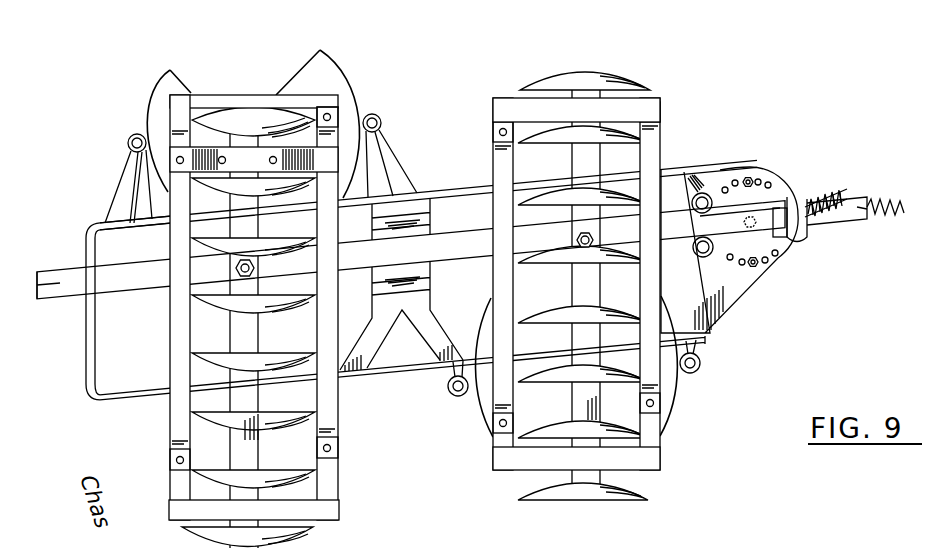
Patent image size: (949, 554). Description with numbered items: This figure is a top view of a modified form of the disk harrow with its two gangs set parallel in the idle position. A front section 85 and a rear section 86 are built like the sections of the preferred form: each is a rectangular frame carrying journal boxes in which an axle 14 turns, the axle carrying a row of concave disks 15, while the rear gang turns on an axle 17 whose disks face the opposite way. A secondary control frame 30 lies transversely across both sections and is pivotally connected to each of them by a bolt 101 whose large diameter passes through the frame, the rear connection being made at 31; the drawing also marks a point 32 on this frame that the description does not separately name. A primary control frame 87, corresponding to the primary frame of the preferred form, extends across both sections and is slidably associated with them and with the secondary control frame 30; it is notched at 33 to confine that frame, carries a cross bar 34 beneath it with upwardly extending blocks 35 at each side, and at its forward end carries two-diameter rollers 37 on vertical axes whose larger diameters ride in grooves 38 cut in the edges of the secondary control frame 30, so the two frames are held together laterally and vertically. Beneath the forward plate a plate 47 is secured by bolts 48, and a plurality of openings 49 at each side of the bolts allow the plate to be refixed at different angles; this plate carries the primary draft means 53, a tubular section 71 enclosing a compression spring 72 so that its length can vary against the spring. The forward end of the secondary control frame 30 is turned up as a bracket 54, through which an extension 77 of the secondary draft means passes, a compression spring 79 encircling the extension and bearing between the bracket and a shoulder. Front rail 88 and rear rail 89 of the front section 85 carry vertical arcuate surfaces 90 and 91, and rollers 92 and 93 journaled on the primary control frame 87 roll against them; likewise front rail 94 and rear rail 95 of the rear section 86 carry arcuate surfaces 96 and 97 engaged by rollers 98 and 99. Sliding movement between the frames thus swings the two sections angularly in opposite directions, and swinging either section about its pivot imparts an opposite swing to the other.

The axle 14 is at (582, 401).
The disks 15 is at (560, 490).
The axle 17 is at (250, 334).
The secondary control frame 30 is at (50, 293).
The pivotal connection 31 is at (254, 268).
The tongue beam 32 is at (576, 240).
The notch 33 is at (83, 259).
The cross bar 34 is at (436, 205).
The blocks 35 is at (432, 230).
The rollers 37 is at (702, 192).
The grooves 38 is at (672, 250).
The plate 47 is at (743, 223).
The bolts 48 is at (748, 177).
The openings 49 is at (770, 184).
The primary draft means 53 is at (857, 221).
The bracket 54 is at (801, 240).
The tubular section 71 is at (858, 226).
The compression spring 72 is at (906, 214).
The extension 77 is at (846, 188).
The compression spring 79 is at (817, 193).
The front section 85 is at (503, 462).
The rear section 86 is at (318, 512).
The primary control frame 87 is at (122, 396).
The front rail 88 is at (661, 447).
The rear rail 89 is at (497, 447).
The arcuate surface 90 is at (683, 396).
The arcuate surface 91 is at (477, 411).
The roller 92 is at (701, 363).
The roller 93 is at (449, 383).
The front rail 94 is at (337, 227).
The rear rail 95 is at (177, 238).
The arcuate surface 96 is at (342, 70).
The arcuate surface 97 is at (164, 80).
The roller 98 is at (381, 119).
The roller 99 is at (128, 143).
The bolt 101 is at (594, 239).